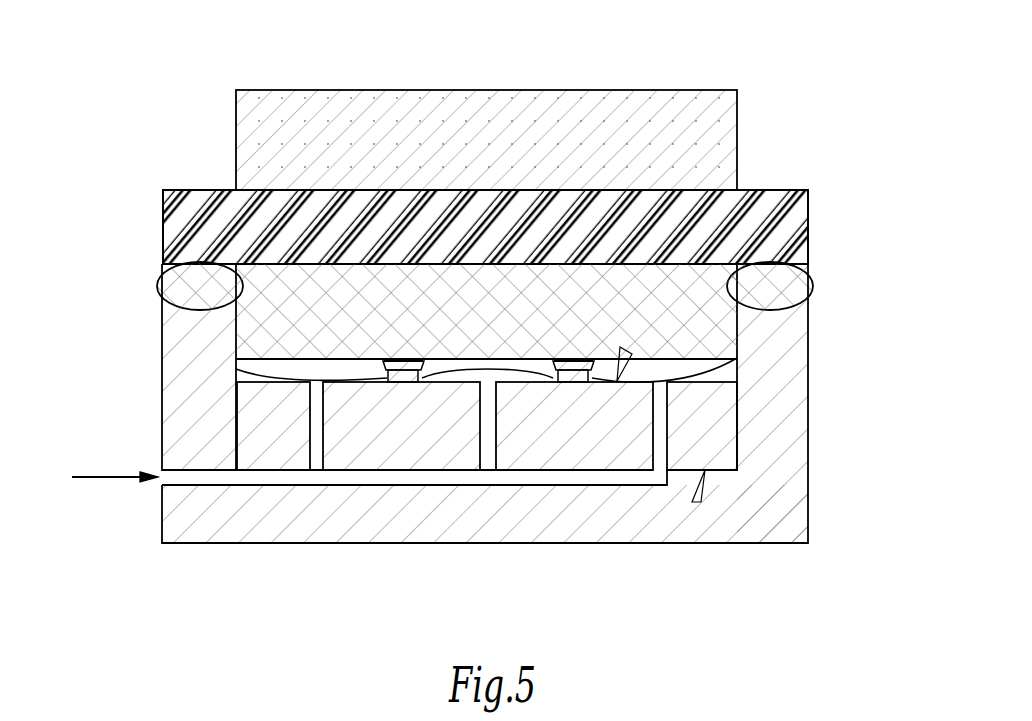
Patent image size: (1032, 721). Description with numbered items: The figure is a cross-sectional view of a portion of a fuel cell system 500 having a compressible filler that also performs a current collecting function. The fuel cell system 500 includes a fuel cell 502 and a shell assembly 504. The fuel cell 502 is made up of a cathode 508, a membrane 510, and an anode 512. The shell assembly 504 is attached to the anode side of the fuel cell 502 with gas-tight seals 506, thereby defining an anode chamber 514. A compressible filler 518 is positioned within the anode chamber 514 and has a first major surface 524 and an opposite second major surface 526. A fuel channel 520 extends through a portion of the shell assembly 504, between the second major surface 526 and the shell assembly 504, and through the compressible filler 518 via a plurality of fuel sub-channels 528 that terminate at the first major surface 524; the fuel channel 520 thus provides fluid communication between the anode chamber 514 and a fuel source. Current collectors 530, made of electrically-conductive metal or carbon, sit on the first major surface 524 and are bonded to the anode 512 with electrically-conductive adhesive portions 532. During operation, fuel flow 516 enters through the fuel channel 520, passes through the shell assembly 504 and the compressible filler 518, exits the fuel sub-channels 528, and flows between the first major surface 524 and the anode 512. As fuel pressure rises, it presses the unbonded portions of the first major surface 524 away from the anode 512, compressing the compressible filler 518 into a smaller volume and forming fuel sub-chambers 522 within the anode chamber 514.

The fuel cell system 500 is at (826, 26).
The fuel cell 502 is at (787, 191).
The shell assembly 504 is at (808, 502).
The seals 506 is at (157, 284).
The cathode 508 is at (539, 90).
The membrane 510 is at (808, 204).
The anode 512 is at (253, 338).
The anode chamber 514 is at (740, 413).
The fuel flow 516 is at (104, 475).
The compressible filler 518 is at (723, 448).
The fuel channel 520 is at (203, 478).
The fuel sub-chambers 522 is at (698, 373).
The first major surface 524 is at (630, 352).
The second major surface 526 is at (700, 502).
The fuel sub-channels 528 is at (317, 428).
The current collectors 530 is at (402, 380).
The electrically-conductive adhesive portions 532 is at (397, 360).